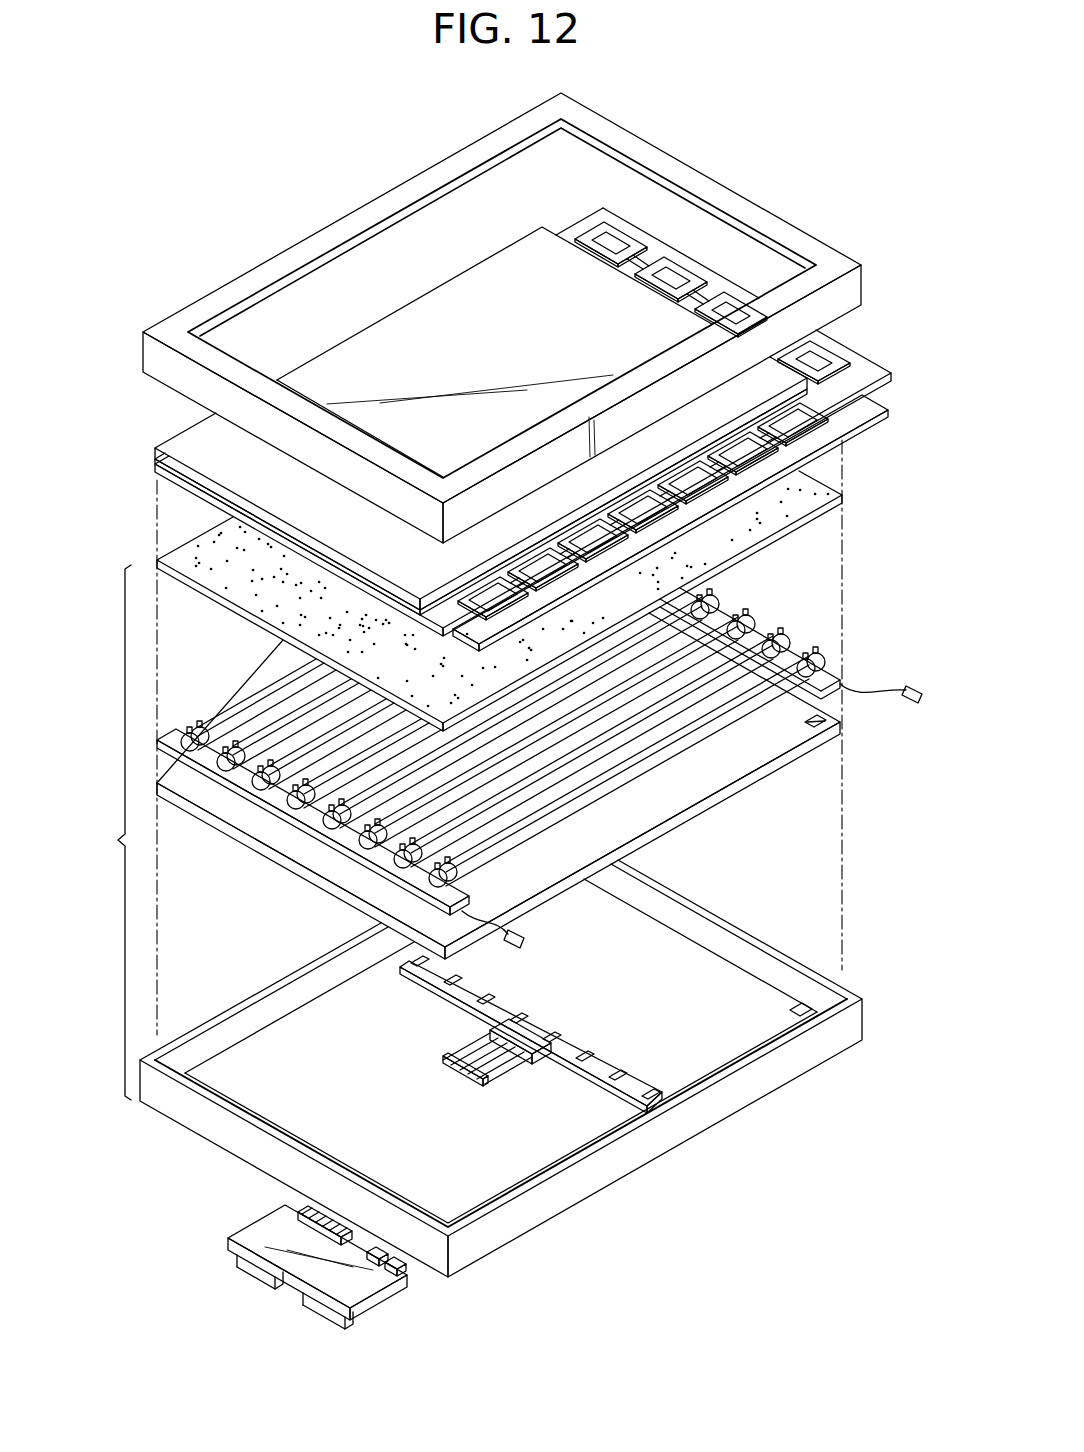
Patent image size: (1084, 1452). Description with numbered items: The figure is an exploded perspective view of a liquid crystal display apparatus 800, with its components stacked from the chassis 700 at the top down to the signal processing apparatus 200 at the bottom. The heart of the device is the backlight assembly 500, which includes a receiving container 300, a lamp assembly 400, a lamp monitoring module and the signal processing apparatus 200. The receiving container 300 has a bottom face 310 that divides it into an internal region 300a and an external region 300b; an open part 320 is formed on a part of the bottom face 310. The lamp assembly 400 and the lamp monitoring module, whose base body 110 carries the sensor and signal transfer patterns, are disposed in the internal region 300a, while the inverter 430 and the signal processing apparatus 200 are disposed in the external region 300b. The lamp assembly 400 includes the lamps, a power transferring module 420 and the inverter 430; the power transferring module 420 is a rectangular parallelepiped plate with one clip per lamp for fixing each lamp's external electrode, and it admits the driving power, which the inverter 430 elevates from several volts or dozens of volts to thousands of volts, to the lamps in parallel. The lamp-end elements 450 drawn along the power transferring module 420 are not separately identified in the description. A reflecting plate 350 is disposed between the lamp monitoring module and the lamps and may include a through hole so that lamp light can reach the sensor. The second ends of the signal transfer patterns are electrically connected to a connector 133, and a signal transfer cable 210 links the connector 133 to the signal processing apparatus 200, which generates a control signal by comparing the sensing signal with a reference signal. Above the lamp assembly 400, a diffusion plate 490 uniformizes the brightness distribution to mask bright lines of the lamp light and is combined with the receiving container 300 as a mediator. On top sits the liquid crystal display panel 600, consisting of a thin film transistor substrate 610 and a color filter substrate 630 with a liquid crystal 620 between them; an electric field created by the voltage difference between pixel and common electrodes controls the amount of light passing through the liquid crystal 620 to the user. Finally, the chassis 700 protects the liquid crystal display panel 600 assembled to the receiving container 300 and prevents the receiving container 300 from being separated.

The liquid crystal display apparatus 800 is at (802, 143).
The chassis 700 is at (526, 311).
The liquid crystal display panel 600 is at (518, 429).
The thin film transistor (TFT) substrate 610 is at (170, 476).
The liquid crystal 620 is at (157, 455).
The color filter substrate 630 is at (188, 436).
The backlight assembly 500 is at (504, 858).
The diffusion plate 490 is at (843, 496).
The lamp assembly 400 is at (539, 768).
The power transferring module 420 is at (165, 738).
The lamp 450 is at (183, 753).
The reflecting plate 350 is at (690, 795).
The receiving container 300 is at (529, 1068).
The internal region 300a is at (356, 1084).
The external region 300b is at (184, 1190).
The bottom face 310 is at (515, 1160).
The base body 110 is at (673, 1087).
The connector 133 is at (535, 1030).
The signal transfer cable 210 is at (517, 1073).
The open part 320 is at (442, 1062).
The signal processing apparatus 200 is at (305, 1268).
The inverter 430 is at (372, 1283).